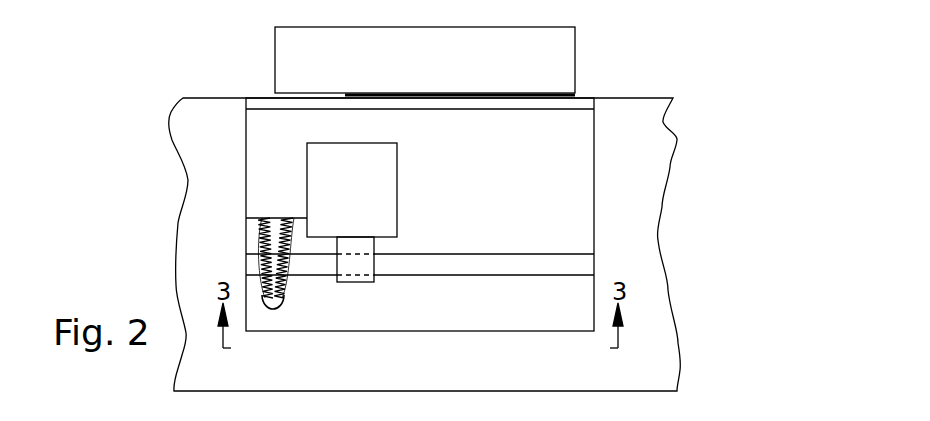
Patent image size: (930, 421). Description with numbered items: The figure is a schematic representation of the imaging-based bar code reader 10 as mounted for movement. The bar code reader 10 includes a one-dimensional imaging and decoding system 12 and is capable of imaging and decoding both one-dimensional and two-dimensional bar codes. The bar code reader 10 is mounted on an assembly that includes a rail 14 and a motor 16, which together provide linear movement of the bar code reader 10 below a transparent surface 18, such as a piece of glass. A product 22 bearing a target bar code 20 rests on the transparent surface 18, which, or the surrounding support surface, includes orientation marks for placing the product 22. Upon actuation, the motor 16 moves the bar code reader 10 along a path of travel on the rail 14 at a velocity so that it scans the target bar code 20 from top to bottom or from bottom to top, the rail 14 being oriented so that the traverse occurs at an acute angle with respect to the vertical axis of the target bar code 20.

The bar code reader 10 is at (381, 221).
The 1D imaging and decoding system 12 is at (397, 222).
The rail 14 is at (402, 263).
The motor 16 is at (343, 263).
The transparent surface 18 is at (523, 103).
The target bar code 20 is at (400, 94).
The product 22 is at (560, 63).